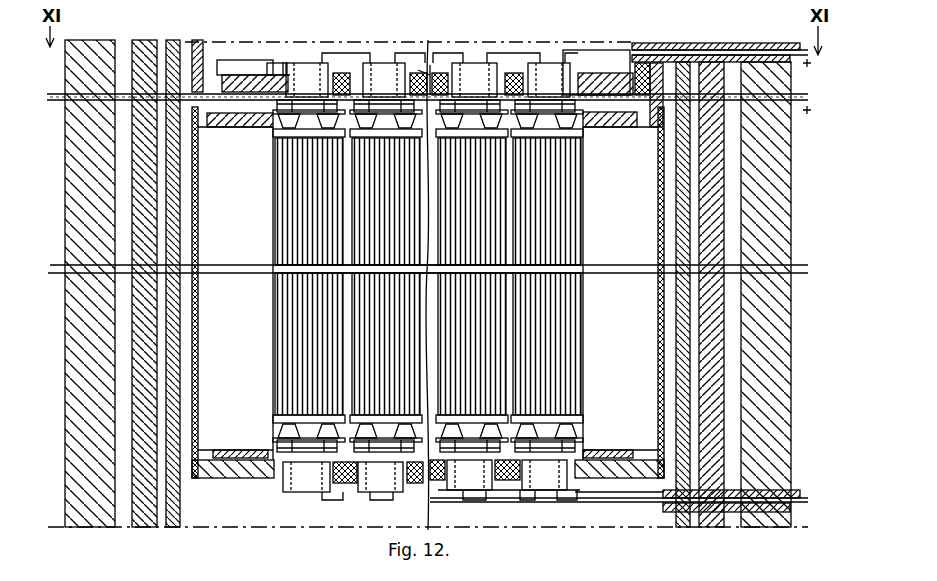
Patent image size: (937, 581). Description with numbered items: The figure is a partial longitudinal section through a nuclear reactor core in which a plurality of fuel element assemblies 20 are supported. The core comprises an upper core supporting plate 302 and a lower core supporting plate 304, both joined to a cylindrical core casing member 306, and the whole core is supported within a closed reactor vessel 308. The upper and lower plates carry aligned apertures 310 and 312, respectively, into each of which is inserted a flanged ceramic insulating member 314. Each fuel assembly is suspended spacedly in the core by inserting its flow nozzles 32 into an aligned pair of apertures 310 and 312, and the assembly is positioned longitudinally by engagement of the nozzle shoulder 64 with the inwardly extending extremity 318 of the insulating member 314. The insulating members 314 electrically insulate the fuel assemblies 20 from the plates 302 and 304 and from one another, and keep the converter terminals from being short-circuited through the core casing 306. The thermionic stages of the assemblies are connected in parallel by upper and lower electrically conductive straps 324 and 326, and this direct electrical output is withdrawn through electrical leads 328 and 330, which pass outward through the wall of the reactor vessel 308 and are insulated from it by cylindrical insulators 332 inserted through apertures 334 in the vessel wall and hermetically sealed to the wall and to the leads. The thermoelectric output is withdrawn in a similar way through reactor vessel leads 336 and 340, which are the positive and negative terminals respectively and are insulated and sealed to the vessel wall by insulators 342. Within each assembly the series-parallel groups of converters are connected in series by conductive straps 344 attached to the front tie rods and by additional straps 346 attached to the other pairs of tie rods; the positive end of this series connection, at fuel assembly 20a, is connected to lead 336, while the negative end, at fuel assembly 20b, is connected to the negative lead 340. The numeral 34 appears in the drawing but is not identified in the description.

The fuel element assembly 20 is at (622, 177).
The fuel assembly 20a is at (565, 204).
The fuel assembly 20b is at (283, 203).
The flow nozzle 32 is at (522, 490).
The spacer 34 is at (468, 492).
The nozzle shoulder 64 is at (270, 75).
The upper core supporting plate 302 is at (232, 76).
The lower core supporting plate 304 is at (342, 490).
The core casing member 306 is at (198, 326).
The reactor vessel 308 is at (80, 44).
The aperture 310 is at (310, 482).
The aperture 312 is at (393, 64).
The insulating member 314 is at (438, 62).
The inwardly extending extremity 318 is at (283, 82).
The upper electrically conductive strap 324 is at (340, 72).
The lower electrically conductive strap 326 is at (362, 494).
The electrical lead 328 is at (634, 497).
The electrical lead 330 is at (584, 50).
The cylindrical insulator 332 is at (626, 48).
The aperture 334 is at (722, 44).
The reactor vessel lead 336 is at (602, 128).
The reactor vessel lead 340 is at (246, 128).
The insulator 342 is at (128, 50).
The conductive strap 344 is at (300, 60).
The lead or strap 346 is at (350, 53).